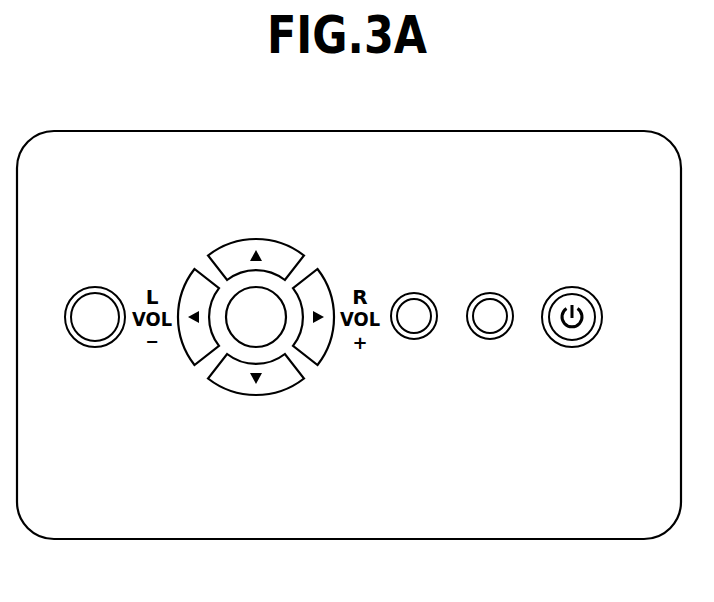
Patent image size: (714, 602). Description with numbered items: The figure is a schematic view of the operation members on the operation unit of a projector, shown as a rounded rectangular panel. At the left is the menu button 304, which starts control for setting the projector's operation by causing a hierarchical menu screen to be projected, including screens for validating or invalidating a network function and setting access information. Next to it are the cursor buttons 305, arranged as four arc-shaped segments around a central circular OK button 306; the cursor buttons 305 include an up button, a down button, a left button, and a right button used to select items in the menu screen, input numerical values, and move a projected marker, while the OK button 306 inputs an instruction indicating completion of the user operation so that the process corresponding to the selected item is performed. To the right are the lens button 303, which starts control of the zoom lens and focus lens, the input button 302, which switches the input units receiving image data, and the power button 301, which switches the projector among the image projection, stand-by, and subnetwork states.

The power button 301 is at (572, 287).
The input button 302 is at (490, 293).
The lens button 303 is at (415, 293).
The menu button 304 is at (95, 287).
The cursor buttons 305 is at (285, 257).
The OK button 306 is at (237, 337).